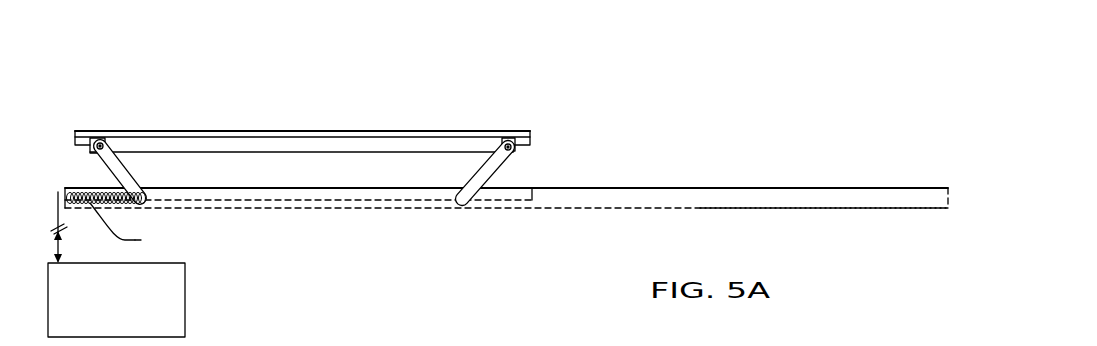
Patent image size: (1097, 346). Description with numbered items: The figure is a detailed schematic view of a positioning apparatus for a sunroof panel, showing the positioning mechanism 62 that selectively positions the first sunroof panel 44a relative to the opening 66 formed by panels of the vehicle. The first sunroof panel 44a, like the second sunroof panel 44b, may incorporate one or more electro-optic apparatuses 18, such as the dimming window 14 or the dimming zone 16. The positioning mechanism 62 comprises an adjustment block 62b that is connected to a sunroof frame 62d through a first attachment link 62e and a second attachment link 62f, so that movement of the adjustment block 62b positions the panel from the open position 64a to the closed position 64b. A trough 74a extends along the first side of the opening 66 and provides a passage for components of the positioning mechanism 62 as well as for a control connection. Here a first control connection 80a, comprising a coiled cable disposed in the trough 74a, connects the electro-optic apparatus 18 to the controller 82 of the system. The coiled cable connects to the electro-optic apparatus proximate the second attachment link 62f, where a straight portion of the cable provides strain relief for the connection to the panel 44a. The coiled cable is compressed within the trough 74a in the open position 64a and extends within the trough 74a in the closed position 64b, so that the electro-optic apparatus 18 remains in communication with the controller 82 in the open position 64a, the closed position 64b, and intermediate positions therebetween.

The dimming window 14 is at (293, 151).
The dimming zone 16 is at (293, 151).
The electro-optic apparatus 18 is at (327, 287).
The first sunroof panel 44a is at (348, 130).
The second sunroof panel 44b is at (350, 197).
The positioning mechanism 62 is at (775, 66).
The open position 64a is at (777, 62).
The closed position 64b is at (822, 345).
The adjustment block 62b is at (233, 220).
The sunroof frame 62d is at (458, 142).
The first attachment link 62e is at (126, 132).
The second attachment link 62f is at (503, 153).
The opening 66 is at (744, 198).
The trough 74a is at (428, 198).
The first control connection 80a is at (218, 276).
The controller 82 is at (130, 322).